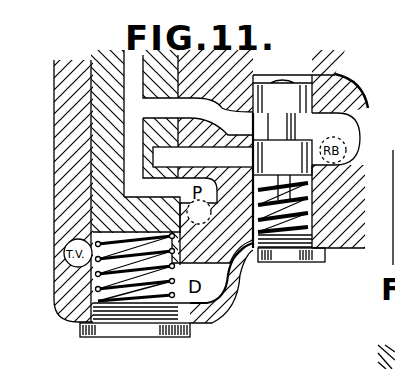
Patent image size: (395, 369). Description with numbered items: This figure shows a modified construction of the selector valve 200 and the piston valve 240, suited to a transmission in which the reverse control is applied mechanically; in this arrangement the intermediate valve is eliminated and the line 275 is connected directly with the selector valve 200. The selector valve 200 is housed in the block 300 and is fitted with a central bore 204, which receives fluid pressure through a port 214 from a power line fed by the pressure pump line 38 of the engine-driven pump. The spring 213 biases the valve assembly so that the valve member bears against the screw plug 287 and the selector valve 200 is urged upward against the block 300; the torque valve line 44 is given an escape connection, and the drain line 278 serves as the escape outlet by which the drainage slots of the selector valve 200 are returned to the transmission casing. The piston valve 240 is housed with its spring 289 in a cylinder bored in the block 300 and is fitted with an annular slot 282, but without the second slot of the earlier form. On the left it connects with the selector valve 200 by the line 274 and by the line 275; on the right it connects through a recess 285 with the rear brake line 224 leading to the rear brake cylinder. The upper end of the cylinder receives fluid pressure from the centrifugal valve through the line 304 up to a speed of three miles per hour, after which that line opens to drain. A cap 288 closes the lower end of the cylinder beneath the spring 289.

The selector valve 200 is at (100, 118).
The block 300 is at (72, 142).
The central bore 204 is at (130, 190).
The torque valve line 44 is at (64, 266).
The spring 213 is at (62, 306).
The port 214 is at (161, 188).
The line 274 is at (198, 85).
The line 275 is at (198, 190).
The annular slot 282 is at (300, 120).
The recess 285 is at (334, 127).
The valve 240 is at (282, 170).
The rear brake line 224 is at (329, 162).
The cap 288 is at (277, 255).
The spring 289 is at (279, 225).
The escape outlet 278 is at (236, 268).
The screw plug 287 is at (190, 330).
The line 304 is at (338, 72).
The pressure pump line 38 is at (199, 212).